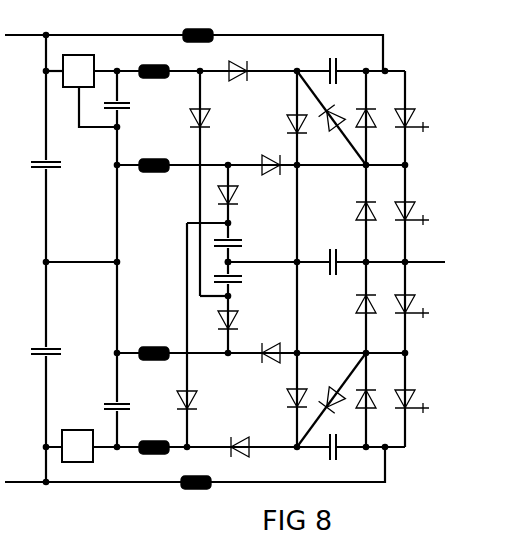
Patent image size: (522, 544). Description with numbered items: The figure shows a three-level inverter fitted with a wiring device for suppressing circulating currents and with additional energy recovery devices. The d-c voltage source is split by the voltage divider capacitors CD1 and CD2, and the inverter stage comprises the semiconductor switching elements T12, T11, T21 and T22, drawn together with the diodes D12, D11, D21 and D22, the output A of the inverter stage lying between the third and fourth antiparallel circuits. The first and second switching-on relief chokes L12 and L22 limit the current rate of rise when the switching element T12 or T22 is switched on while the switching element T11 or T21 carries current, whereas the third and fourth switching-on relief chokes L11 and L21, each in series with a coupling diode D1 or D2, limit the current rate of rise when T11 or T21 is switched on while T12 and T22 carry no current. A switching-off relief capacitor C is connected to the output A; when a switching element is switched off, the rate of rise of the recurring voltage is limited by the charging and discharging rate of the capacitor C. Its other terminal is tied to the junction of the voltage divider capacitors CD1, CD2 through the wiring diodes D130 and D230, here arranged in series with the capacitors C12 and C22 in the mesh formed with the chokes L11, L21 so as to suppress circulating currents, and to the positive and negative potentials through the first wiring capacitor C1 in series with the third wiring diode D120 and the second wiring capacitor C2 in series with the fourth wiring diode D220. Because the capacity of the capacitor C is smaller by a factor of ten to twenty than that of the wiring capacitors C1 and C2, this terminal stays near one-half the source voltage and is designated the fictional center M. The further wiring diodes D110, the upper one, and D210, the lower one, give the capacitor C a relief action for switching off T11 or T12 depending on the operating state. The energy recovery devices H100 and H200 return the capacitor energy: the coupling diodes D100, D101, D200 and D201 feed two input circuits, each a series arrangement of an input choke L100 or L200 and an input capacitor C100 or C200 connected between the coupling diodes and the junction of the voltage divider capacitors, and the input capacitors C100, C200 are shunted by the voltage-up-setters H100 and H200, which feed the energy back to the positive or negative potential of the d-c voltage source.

The voltage-up-setter H100 is at (71, 55).
The voltage-up-setter H200 is at (92, 422).
The first switching-on relief choke L12 is at (200, 33).
The input choke L100 is at (138, 68).
The third switching-on relief choke L11 is at (158, 156).
The fourth switching-on relief choke L21 is at (143, 349).
The input choke L200 is at (143, 443).
The second switching-on relief choke L22 is at (185, 476).
The first wiring capacitor C1 is at (338, 71).
The switching-off relief capacitor C is at (338, 262).
The second wiring capacitor C2 is at (338, 443).
The input capacitor C100 is at (124, 110).
The input capacitor C200 is at (124, 403).
The voltage divider capacitor CD1 is at (53, 163).
The voltage divider capacitor CD2 is at (52, 351).
The capacitor C12 is at (238, 239).
The capacitor C22 is at (244, 279).
The coupling diode D100 is at (243, 69).
The first coupling diode D1 is at (266, 160).
The second coupling diode D2 is at (268, 349).
The coupling diode D200 is at (238, 444).
The coupling diode D201 is at (210, 118).
The third wiring diode D120 is at (287, 122).
The first wiring diode D130 is at (238, 195).
The second wiring diode D230 is at (238, 321).
The coupling diode D101 is at (197, 399).
The fourth wiring diode D220 is at (287, 396).
The upper further wiring diode D110 is at (340, 118).
The lower further wiring diode D210 is at (326, 394).
The diode D12 is at (376, 118).
The diode D11 is at (376, 210).
The diode D21 is at (376, 304).
The diode D22 is at (376, 397).
The semiconductor switching element T12 is at (409, 107).
The semiconductor switching element T11 is at (409, 199).
The semiconductor switching element T21 is at (409, 293).
The semiconductor switching element T22 is at (409, 384).
The fictional center M is at (234, 261).
The output A is at (426, 262).